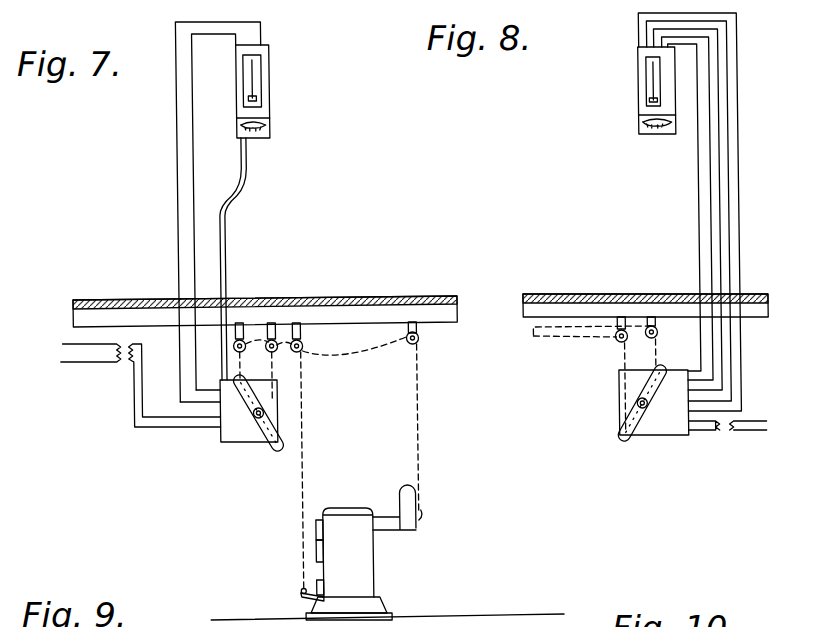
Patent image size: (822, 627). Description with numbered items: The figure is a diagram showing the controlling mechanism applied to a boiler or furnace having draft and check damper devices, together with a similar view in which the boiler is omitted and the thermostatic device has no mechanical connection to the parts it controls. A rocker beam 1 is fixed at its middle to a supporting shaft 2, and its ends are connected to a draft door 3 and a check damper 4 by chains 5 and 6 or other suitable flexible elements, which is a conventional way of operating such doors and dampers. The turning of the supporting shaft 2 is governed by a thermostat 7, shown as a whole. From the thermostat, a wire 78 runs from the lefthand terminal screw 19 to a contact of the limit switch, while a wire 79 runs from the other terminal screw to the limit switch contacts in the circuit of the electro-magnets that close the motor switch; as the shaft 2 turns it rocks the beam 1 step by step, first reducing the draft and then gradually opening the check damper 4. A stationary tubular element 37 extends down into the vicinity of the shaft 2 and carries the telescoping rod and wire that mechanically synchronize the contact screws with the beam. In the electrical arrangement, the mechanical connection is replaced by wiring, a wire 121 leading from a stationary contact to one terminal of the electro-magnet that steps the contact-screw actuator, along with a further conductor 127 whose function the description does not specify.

In FIG. 7, the rocker beam 1 is at (248, 406).
In FIG. 8, the rocker beam 1 is at (650, 390).
In FIG. 7, the supporting shaft 2 is at (257, 418).
In FIG. 8, the supporting shaft 2 is at (642, 408).
In FIG. 7, the draft door 3 is at (300, 598).
In FIG. 7, the check damper 4 is at (416, 528).
In FIG. 7, the chain 5 is at (306, 470).
In FIG. 8, the chain 5 is at (585, 338).
In FIG. 7, the chain 6 is at (420, 445).
In FIG. 8, the chain 6 is at (533, 330).
In FIG. 7, the thermostat 7 is at (278, 109).
In FIG. 8, the thermostat 7 is at (657, 90).
In FIG. 7, the terminal screw 19 is at (179, 236).
In FIG. 7, the stationary tubular element 37 is at (228, 232).
In FIG. 7, the wire 78 is at (195, 172).
In FIG. 8, the wire 78 is at (741, 170).
In FIG. 8, the wire 79 is at (700, 172).
In FIG. 8, the wire 121 is at (710, 222).
In FIG. 8, the tube 127 is at (731, 233).